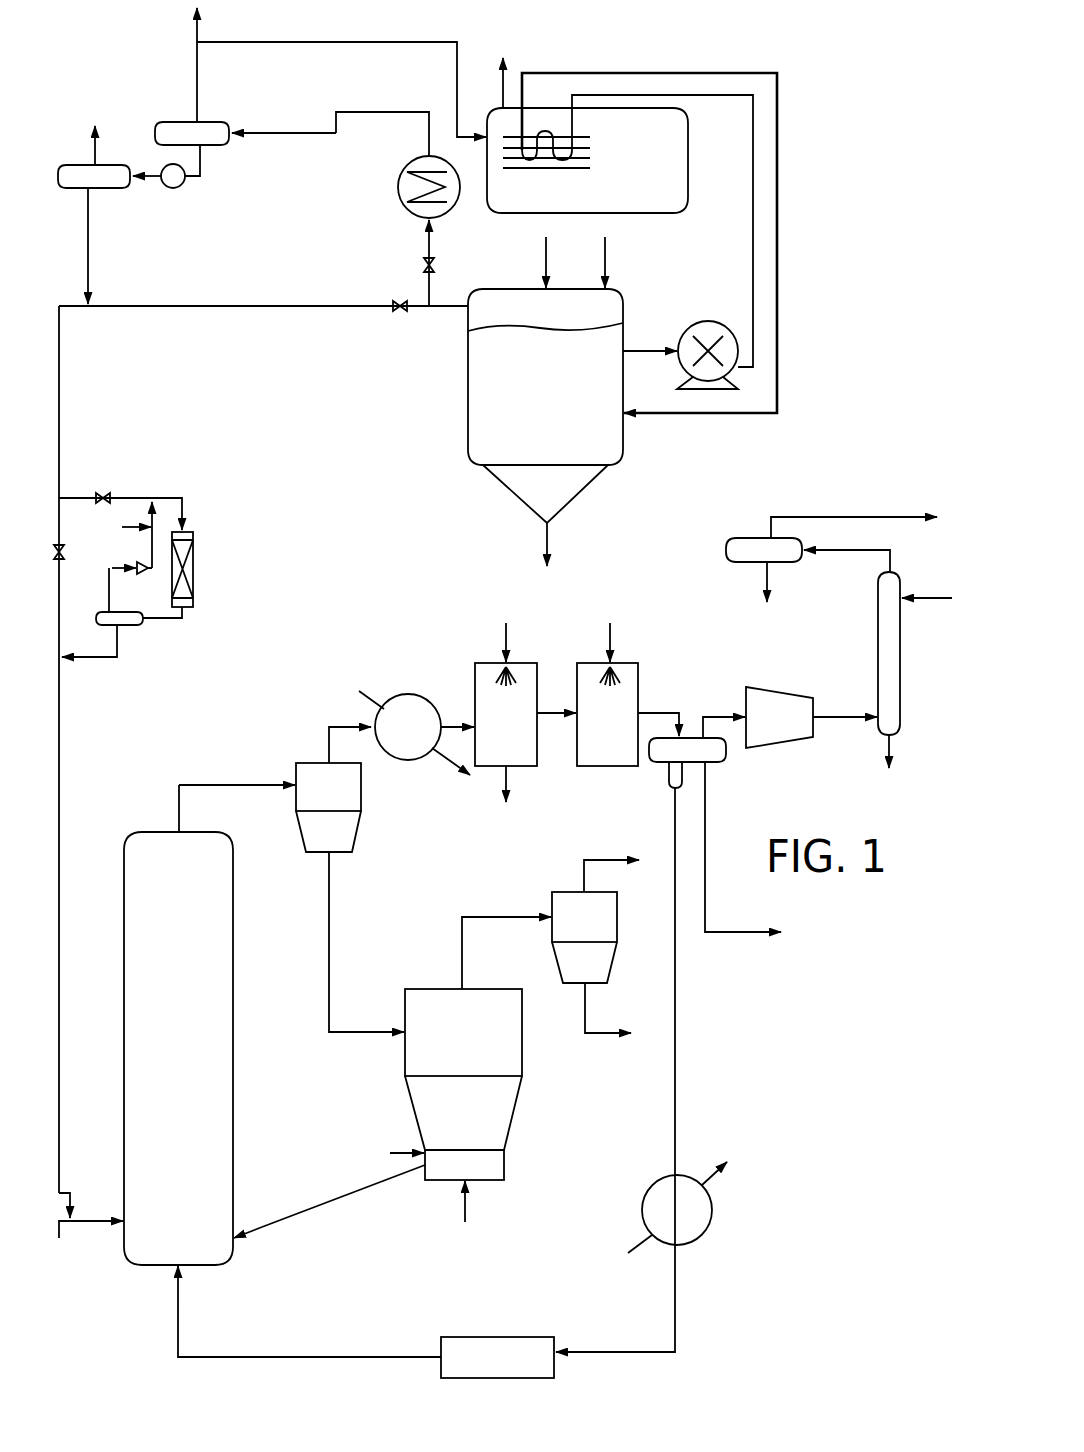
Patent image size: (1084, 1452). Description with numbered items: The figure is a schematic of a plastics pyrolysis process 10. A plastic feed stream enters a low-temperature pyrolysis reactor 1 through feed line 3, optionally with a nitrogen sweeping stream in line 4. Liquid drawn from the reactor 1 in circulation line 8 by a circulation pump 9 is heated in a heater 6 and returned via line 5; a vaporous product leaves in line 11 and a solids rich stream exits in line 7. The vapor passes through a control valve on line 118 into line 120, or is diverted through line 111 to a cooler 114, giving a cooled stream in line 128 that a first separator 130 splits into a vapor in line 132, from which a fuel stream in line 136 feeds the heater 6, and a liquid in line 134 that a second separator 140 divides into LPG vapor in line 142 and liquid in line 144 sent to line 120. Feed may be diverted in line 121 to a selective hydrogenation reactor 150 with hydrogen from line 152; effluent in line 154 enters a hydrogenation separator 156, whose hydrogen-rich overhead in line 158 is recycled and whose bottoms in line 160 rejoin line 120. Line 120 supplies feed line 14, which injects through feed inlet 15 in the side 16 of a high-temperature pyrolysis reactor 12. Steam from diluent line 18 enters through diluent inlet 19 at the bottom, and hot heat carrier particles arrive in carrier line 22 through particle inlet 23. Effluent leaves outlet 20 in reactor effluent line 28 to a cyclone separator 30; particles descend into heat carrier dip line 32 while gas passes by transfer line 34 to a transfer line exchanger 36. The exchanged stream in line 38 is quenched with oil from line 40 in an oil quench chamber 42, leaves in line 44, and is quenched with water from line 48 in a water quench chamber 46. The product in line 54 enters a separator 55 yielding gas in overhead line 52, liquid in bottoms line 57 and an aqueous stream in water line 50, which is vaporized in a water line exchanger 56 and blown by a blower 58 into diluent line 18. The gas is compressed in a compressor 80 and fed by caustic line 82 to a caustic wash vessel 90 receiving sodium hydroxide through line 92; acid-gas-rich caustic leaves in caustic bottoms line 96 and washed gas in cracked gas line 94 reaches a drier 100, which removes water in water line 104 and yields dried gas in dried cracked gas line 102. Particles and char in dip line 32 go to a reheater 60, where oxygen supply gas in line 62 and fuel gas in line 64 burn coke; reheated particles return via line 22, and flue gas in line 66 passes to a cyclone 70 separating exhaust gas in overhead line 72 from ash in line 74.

The low-temperature pyrolysis reactor 1 is at (468, 378).
The feed line 3 is at (546, 246).
The nitrogen sweeping stream line 4 is at (605, 246).
The heated liquid return line 5 is at (778, 101).
The heater 6 is at (689, 138).
The solids rich product line 7 is at (547, 541).
The circulation line 8 is at (641, 349).
The circulation pump 9 is at (703, 322).
The plastics pyrolysis process 10 is at (831, 289).
The vaporous low-temperature product line 11 is at (462, 308).
The high-temperature pyrolysis reactor 12 is at (153, 1048).
The feed line 14 is at (96, 1220).
The feed inlet 15 is at (122, 1229).
The side wall 16 is at (124, 1020).
The diluent line 18 is at (258, 1357).
The diluent inlet 19 is at (183, 1266).
The reactor outlet 20 is at (178, 830).
The carrier line 22 is at (329, 1222).
The particle inlet 23 is at (233, 1243).
The reactor effluent line 28 is at (230, 785).
The cyclone separator 30 is at (310, 762).
The heat carrier dip line 32 is at (329, 905).
The transfer line 34 is at (345, 718).
The transfer line exchanger 36 is at (432, 700).
The exchanged product line 38 is at (464, 725).
The oil stream line 40 is at (506, 636).
The oil quench chamber 42 is at (475, 672).
The oil quenched product line 44 is at (553, 714).
The water quench chamber 46 is at (592, 664).
The water stream line 48 is at (612, 636).
The water line 50 is at (690, 986).
The overhead line 52 is at (712, 712).
The quenched product line 54 is at (660, 713).
The high-temperature pyrolysis separator 55 is at (725, 762).
The water line exchanger 56 is at (652, 1178).
The bottoms line 57 is at (706, 831).
The blower 58 is at (510, 1337).
The reheater 60 is at (445, 989).
The oxygen supply gas line 62 is at (465, 1216).
The fuel gas line 64 is at (400, 1152).
The flue gas line 66 is at (522, 915).
The cyclone 70 is at (565, 892).
The overhead line 72 is at (608, 860).
The ash line 74 is at (587, 1036).
The compressor 80 is at (776, 696).
The caustic line 82 is at (836, 719).
The caustic wash vessel 90 is at (878, 663).
The sodium hydroxide line 92 is at (938, 600).
The cracked gas line 94 is at (862, 551).
The caustic bottoms line 96 is at (892, 746).
The drier 100 is at (795, 563).
The dried cracked gas line 102 is at (780, 517).
The water line 104 is at (765, 581).
The diversion line 111 is at (431, 287).
The cooler 114 is at (405, 218).
The connecting line 118 is at (255, 307).
The high-temperature pyrolysis feed line 120 is at (60, 380).
The hydrogenation diversion line 121 is at (142, 498).
The cooled product line 128 is at (374, 113).
The first separator 130 is at (241, 76).
The first vaporous product line 132 is at (198, 121).
The first liquid product line 134 is at (190, 178).
The fuel line 136 is at (457, 73).
The second separator 140 is at (62, 165).
The second vaporous product line 142 is at (97, 153).
The second liquid product line 144 is at (88, 222).
The selective hydrogenation reactor 150 is at (195, 567).
The hydrogen line 152 is at (152, 543).
The hydrogenated effluent line 154 is at (188, 618).
The hydrogenation separator 156 is at (98, 615).
The hydrogen-rich overhead line 158 is at (111, 587).
The hydrogenated feed line 160 is at (117, 649).